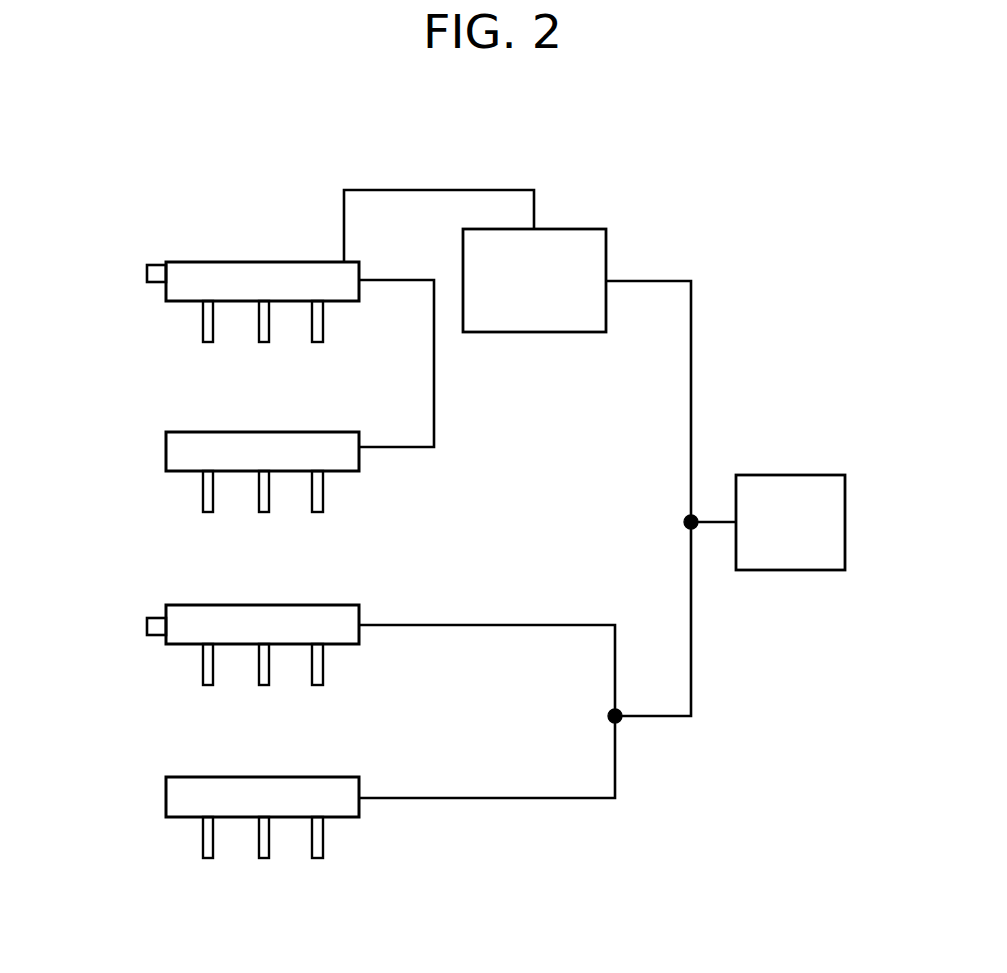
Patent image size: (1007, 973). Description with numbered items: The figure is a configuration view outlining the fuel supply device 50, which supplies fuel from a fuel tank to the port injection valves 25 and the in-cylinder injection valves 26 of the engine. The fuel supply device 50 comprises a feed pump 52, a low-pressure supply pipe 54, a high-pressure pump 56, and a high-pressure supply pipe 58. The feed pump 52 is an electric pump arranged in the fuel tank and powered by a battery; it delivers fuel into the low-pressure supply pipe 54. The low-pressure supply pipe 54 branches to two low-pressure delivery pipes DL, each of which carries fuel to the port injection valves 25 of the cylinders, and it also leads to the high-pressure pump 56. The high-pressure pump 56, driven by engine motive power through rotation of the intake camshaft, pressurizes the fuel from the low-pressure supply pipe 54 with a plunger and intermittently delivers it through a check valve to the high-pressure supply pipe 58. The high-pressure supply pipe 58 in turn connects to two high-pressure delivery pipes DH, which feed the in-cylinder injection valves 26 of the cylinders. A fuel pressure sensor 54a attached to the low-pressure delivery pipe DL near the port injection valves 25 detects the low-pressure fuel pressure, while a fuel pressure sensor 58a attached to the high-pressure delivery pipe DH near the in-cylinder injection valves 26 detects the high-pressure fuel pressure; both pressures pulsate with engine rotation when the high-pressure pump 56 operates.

The fuel supply device 50 is at (752, 173).
The feed pump 52 is at (845, 517).
The low-pressure supply pipe 54 is at (691, 650).
The fuel pressure sensor 54a is at (147, 626).
The high-pressure pump 56 is at (606, 248).
The high-pressure supply pipe 58 is at (418, 190).
The fuel pressure sensor 58a is at (147, 273).
The in-cylinder injection valve 26 is at (261, 343).
The port injection valve 25 is at (261, 686).
The high-pressure delivery pipe DH is at (262, 262).
The low-pressure delivery pipe DL is at (266, 605).